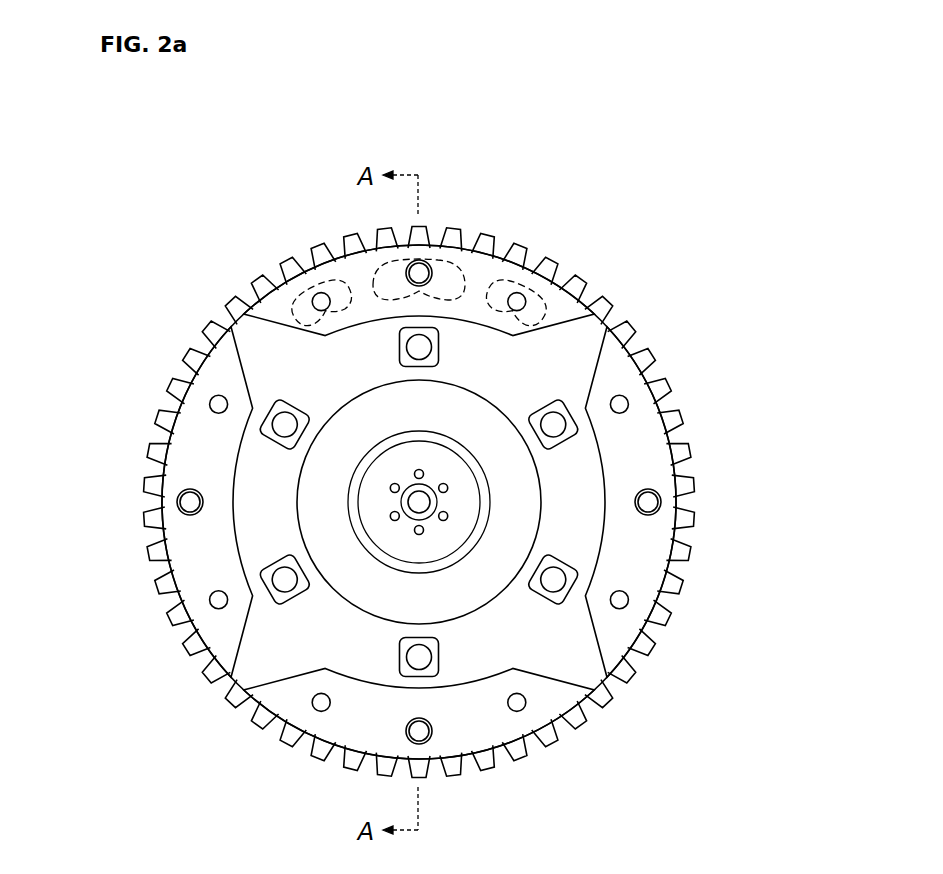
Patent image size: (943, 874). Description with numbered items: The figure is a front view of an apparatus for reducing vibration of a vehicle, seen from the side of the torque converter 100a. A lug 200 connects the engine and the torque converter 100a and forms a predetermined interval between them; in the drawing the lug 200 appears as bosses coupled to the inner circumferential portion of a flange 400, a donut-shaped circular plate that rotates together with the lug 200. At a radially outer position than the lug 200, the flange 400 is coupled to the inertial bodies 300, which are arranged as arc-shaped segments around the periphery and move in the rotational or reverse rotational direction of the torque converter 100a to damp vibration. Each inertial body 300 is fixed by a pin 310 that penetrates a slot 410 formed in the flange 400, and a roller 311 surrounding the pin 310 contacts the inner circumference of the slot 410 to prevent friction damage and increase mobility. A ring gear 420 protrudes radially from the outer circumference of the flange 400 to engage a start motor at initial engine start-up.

The torque converter 100a is at (515, 503).
The lug 200 is at (556, 585).
The inertial body 300 is at (505, 275).
The pin 310 is at (320, 303).
The roller 311 is at (418, 273).
The flange 400 is at (262, 347).
The slot 410 is at (448, 278).
The ring gear 420 is at (610, 300).